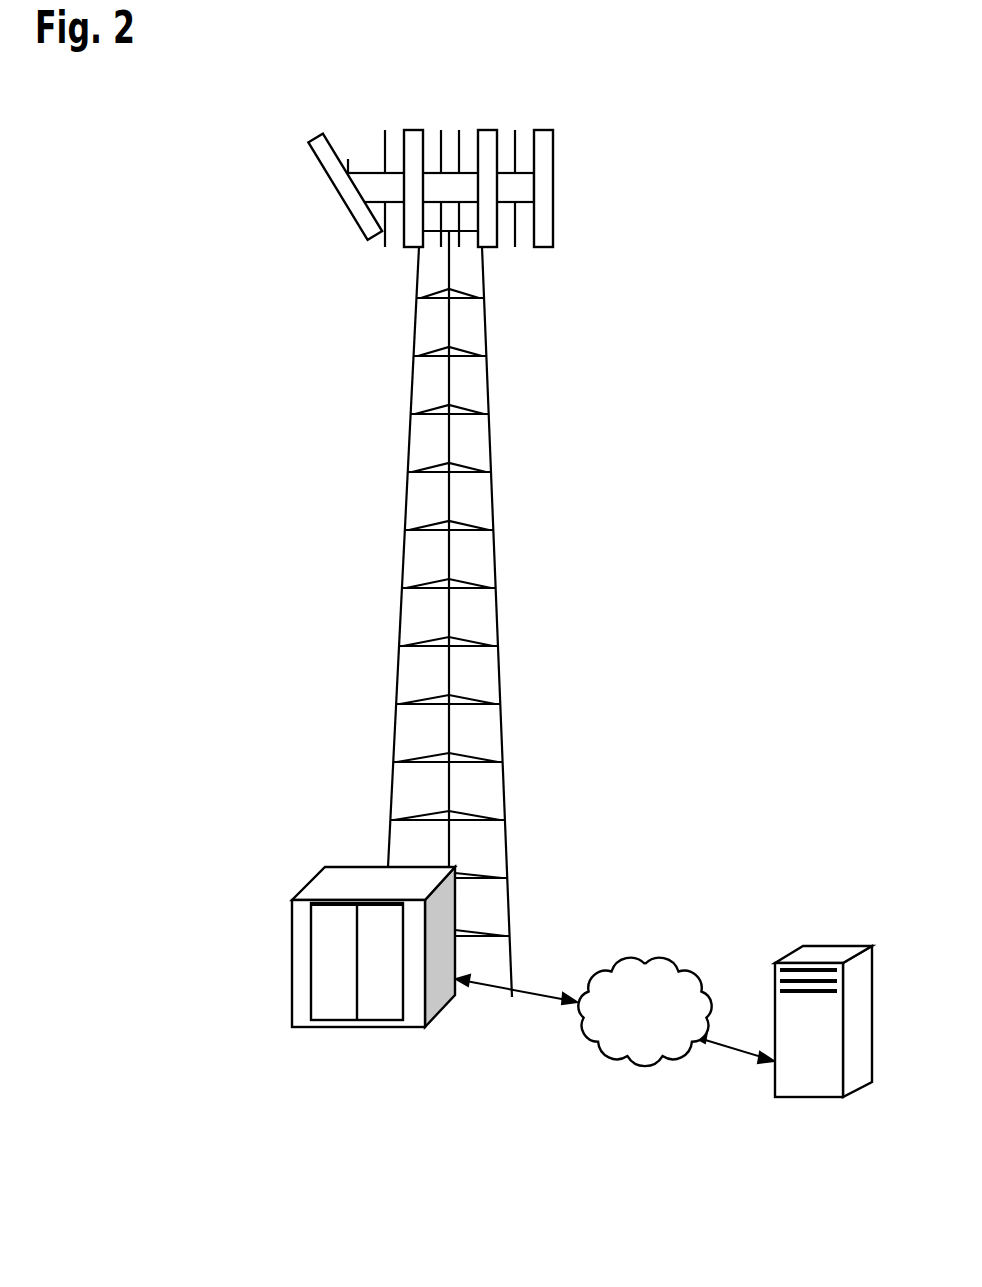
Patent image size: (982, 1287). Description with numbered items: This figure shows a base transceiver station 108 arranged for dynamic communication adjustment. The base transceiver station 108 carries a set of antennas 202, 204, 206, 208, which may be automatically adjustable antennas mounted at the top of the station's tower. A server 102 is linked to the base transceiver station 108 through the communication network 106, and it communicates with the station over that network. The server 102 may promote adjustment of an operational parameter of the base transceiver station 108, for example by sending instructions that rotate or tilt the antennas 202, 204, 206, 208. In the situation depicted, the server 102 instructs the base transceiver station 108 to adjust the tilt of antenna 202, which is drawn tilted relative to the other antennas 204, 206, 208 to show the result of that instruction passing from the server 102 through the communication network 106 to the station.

The server 102 is at (790, 1097).
The communication network 106 is at (613, 1057).
The base transceiver station 108 is at (332, 1027).
The antenna 202 is at (327, 180).
The antenna 204 is at (412, 247).
The antenna 206 is at (490, 248).
The antenna 208 is at (555, 247).